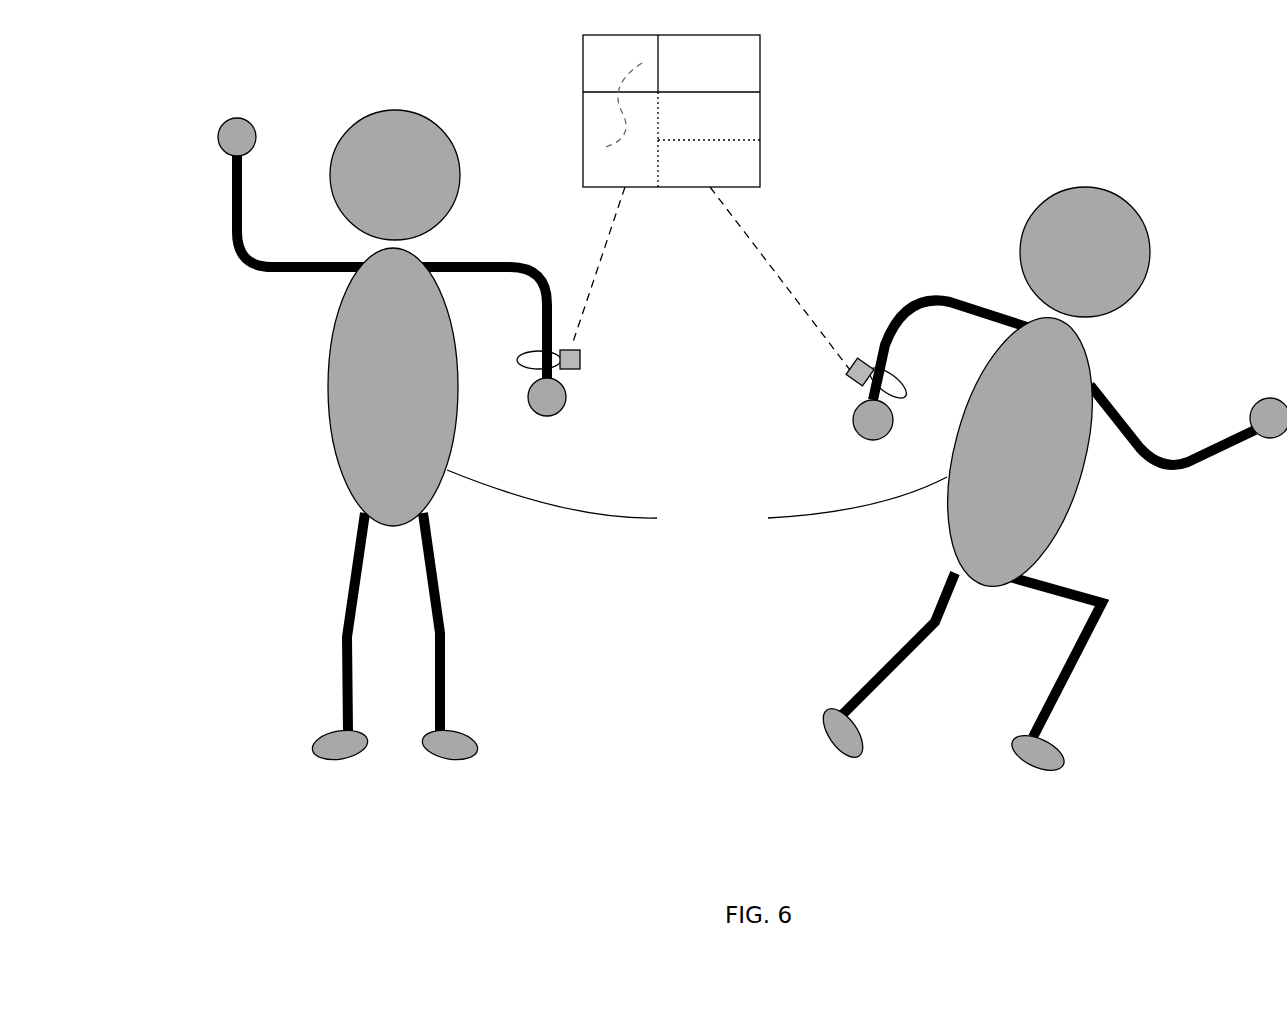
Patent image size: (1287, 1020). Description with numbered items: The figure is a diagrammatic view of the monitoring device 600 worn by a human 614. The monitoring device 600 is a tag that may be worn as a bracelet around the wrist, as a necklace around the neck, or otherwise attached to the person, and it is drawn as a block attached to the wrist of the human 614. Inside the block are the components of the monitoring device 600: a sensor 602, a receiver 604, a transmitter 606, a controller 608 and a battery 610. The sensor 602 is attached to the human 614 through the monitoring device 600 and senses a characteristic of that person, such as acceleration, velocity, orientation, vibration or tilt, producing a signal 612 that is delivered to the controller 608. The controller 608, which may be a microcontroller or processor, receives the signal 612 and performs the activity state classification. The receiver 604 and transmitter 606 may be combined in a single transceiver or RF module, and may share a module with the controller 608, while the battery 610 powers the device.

The monitoring device 600 is at (760, 70).
The sensor 602 is at (620, 63).
The receiver 604 is at (754, 255).
The transmitter 606 is at (709, 116).
The controller 608 is at (615, 250).
The battery 610 is at (709, 73).
The signal 612 is at (620, 110).
The human 614 is at (697, 501).